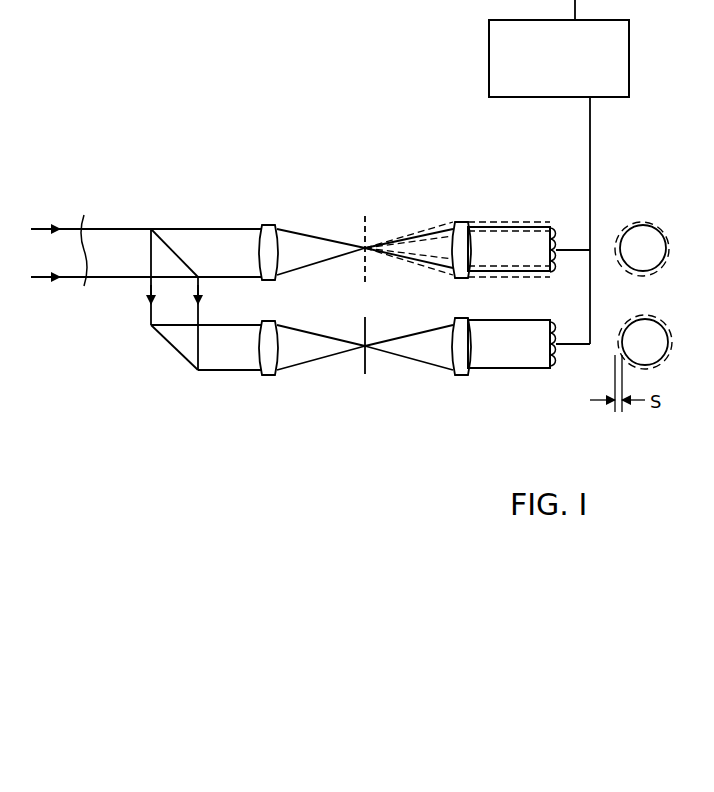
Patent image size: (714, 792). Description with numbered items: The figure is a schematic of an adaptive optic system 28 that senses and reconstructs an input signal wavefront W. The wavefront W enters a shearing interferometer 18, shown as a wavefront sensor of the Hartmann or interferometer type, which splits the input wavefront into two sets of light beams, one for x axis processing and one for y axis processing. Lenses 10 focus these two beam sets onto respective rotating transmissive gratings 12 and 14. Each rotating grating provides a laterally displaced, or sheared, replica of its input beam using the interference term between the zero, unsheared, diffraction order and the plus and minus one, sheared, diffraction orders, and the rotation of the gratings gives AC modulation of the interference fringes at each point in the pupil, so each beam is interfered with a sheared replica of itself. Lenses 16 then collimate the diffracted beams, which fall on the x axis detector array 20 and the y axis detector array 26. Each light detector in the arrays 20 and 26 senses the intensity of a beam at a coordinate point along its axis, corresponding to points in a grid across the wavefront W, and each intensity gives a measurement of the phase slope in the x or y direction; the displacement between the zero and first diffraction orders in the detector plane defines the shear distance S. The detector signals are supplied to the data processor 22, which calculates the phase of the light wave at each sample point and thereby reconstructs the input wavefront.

The lenses 10 is at (278, 321).
The rotating transmissive grating 12 is at (372, 357).
The rotating transmissive grating 14 is at (368, 237).
The lenses 16 is at (455, 319).
The shearing interferometer 18 is at (228, 200).
The x axis detector array 20 is at (565, 251).
The data processor 22 is at (630, 48).
The y axis detector array 26 is at (565, 348).
The adaptive optic system 28 is at (152, 52).